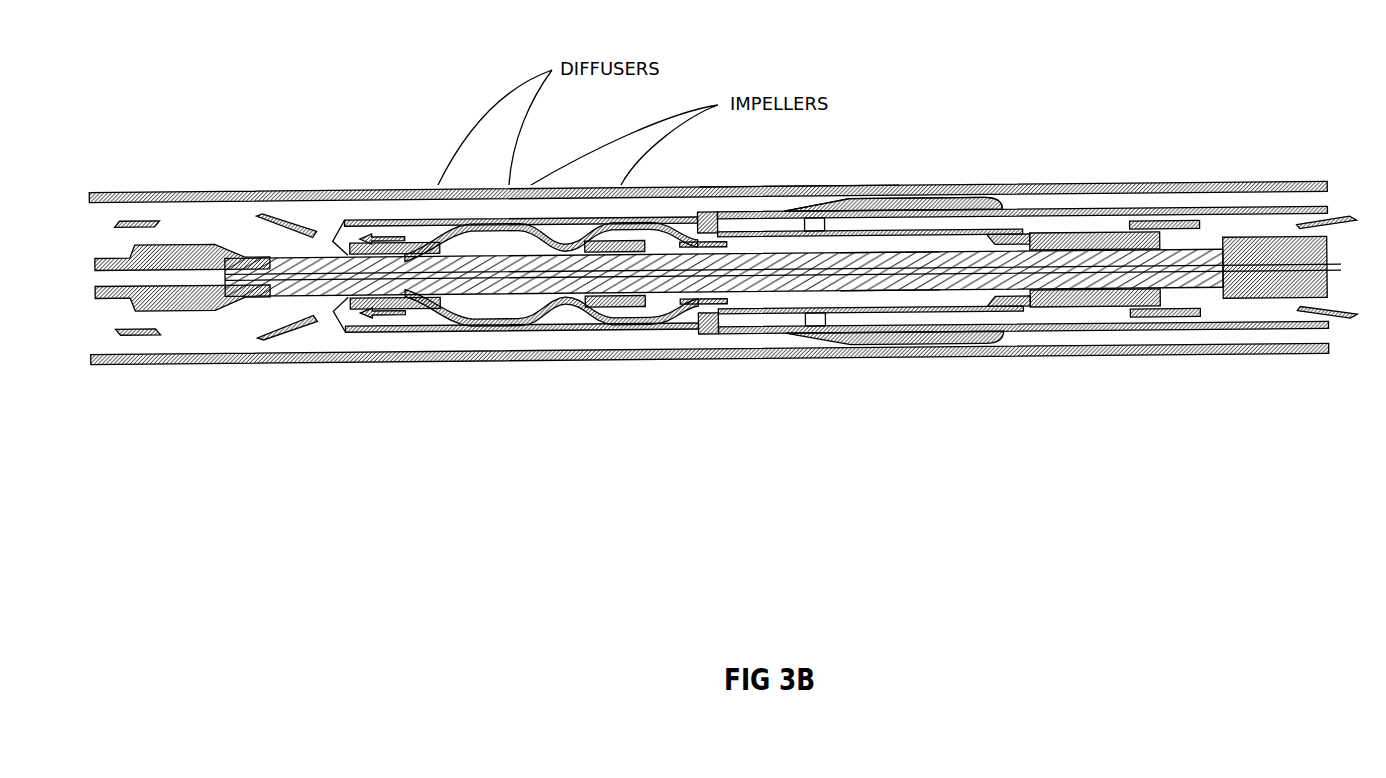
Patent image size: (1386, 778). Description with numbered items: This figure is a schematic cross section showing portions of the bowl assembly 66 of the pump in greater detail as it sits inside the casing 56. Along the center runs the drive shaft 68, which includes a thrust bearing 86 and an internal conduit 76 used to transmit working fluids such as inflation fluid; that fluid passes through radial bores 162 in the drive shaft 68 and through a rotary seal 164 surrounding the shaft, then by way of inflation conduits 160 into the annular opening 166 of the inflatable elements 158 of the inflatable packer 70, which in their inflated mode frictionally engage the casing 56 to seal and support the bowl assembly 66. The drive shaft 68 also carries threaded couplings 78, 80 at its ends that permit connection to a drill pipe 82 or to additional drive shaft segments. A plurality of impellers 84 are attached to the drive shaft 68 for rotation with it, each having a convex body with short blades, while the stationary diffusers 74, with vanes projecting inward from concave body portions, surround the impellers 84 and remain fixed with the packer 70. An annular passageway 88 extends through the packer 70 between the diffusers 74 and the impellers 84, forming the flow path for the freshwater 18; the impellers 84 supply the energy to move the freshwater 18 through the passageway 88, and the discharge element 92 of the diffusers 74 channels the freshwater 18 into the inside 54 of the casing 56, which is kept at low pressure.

The freshwater 18 is at (143, 220).
The drill pipe 82 is at (133, 313).
The threaded coupling 78 is at (197, 318).
The casing 56 is at (233, 365).
The inside of the casing 54 is at (313, 347).
The discharge element 92 is at (377, 340).
The internal conduit 76 is at (945, 330).
The inflatable end packer 70 is at (750, 333).
The rotary seal 164 is at (813, 332).
The drive shaft 68 is at (890, 332).
The annular passageway 88 is at (990, 342).
The inflatable element 158 is at (940, 207).
The radial bore 162 is at (770, 207).
The inflation conduit 160 is at (843, 207).
The annular opening 166 is at (970, 207).
The thrust bearing 86 is at (1100, 305).
The threaded coupling 80 is at (1230, 305).
The impeller 84 is at (522, 332).
The diffuser 74 is at (545, 332).
The bowl assembly 66 is at (1150, 56).